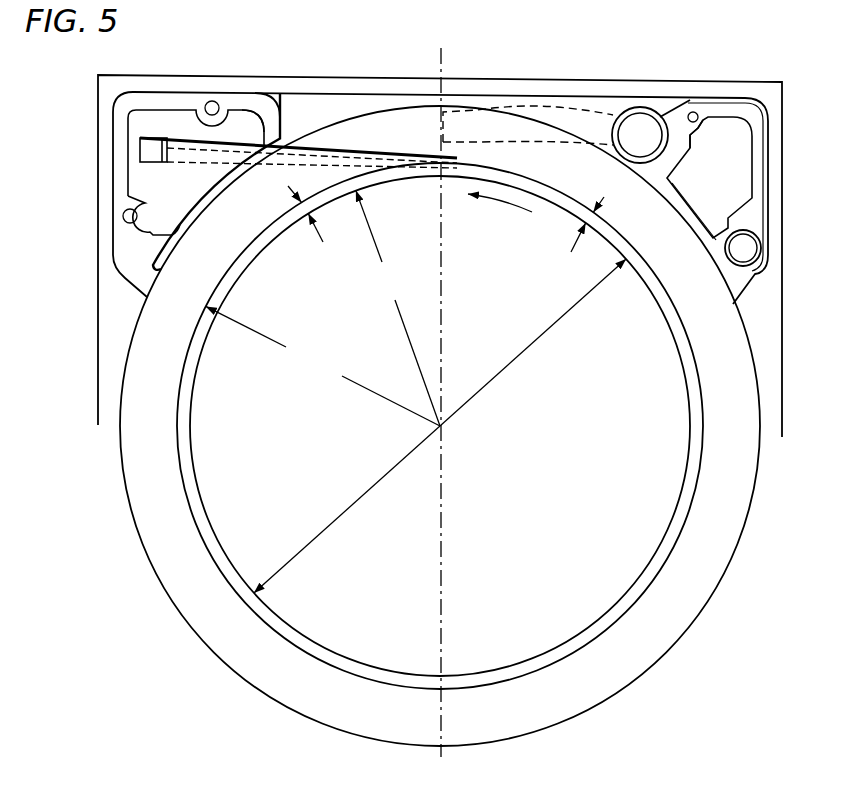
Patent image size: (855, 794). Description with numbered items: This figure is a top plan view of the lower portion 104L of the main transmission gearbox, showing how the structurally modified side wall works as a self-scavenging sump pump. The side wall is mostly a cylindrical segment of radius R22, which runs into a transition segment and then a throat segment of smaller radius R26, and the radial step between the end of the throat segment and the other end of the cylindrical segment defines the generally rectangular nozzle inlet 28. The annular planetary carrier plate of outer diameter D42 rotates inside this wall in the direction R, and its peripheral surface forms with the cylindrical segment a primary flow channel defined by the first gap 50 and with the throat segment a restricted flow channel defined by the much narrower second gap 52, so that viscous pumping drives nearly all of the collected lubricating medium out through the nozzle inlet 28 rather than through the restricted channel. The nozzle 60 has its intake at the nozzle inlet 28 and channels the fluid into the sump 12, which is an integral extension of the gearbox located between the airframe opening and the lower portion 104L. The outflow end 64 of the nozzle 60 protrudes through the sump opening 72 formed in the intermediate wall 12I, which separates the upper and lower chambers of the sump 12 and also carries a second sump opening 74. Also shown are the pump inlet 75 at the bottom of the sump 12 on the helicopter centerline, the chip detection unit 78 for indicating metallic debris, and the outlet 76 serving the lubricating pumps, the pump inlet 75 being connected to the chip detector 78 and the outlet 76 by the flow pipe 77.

The sump 12 is at (769, 190).
The intermediate wall 12I is at (190, 100).
The nozzle inlet 28 is at (458, 158).
The first gap 50 is at (576, 234).
The second gap 52 is at (319, 227).
The nozzle 60 is at (241, 143).
The outflow end 64 is at (155, 135).
The sump opening 72 is at (128, 175).
The sump opening 74 is at (693, 142).
The pump inlet 75 is at (442, 125).
The outlet 76 is at (756, 262).
The flow pipe 77 is at (560, 102).
The chip detection unit 78 is at (641, 107).
The lower portion of the main transmission gearbox 104L is at (223, 637).
The radius of the cylindrical segment R22 is at (323, 366).
The radius of the throat segment R26 is at (398, 308).
The outer diameter of the carrier plate D42 is at (440, 426).
The direction of rotation R is at (500, 214).